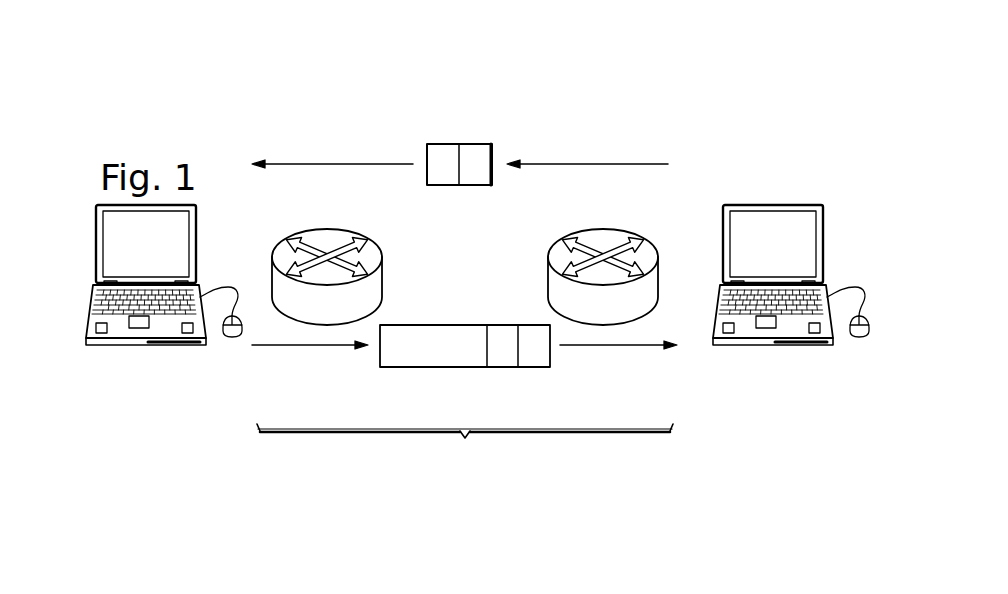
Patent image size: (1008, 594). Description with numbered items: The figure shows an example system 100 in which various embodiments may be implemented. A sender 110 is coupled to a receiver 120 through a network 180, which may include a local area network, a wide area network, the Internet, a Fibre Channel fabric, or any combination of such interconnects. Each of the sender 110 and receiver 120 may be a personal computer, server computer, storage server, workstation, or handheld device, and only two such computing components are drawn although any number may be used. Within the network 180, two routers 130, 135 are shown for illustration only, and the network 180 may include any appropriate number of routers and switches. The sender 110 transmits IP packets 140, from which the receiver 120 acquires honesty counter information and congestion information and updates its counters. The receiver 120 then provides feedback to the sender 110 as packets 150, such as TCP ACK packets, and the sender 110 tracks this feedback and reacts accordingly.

The system 100 is at (590, 76).
The sender 110 is at (96, 245).
The receiver 120 is at (825, 245).
The router 130 is at (327, 228).
The router 135 is at (603, 230).
The IP packets 140 is at (465, 368).
The packets 150 is at (469, 144).
The network 180 is at (465, 448).